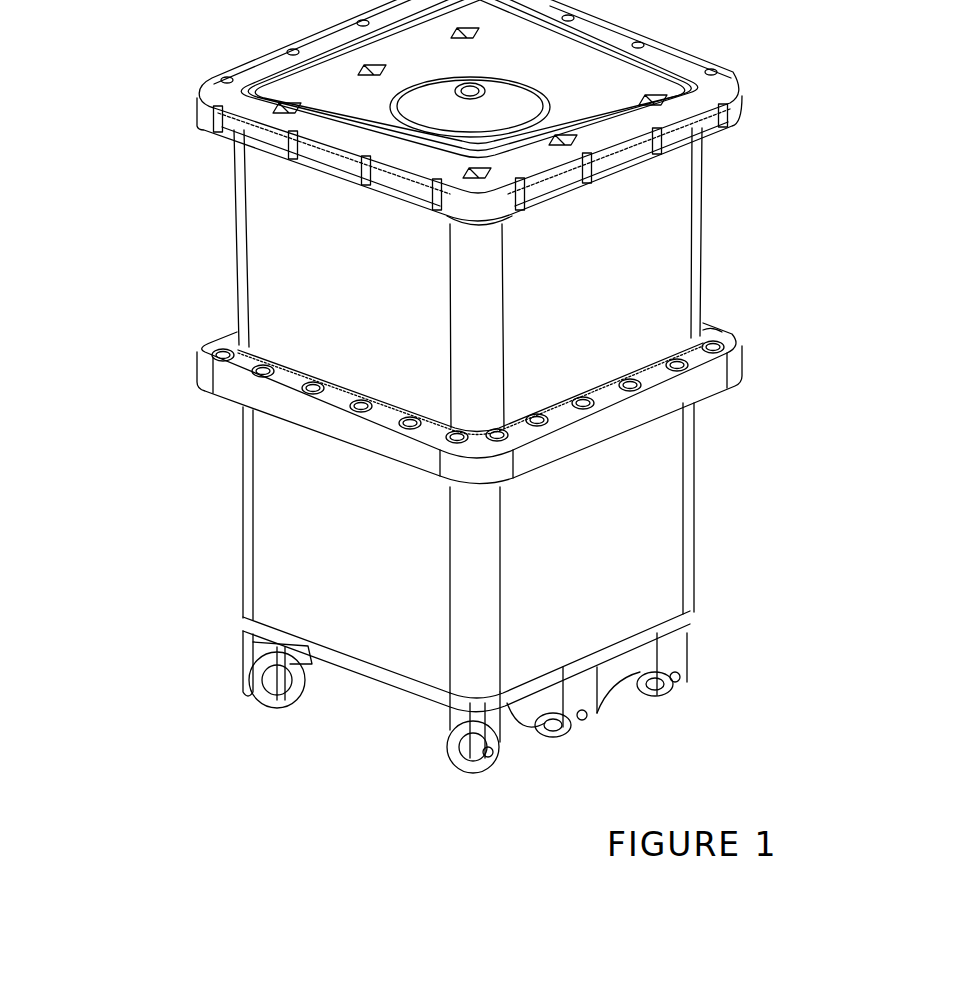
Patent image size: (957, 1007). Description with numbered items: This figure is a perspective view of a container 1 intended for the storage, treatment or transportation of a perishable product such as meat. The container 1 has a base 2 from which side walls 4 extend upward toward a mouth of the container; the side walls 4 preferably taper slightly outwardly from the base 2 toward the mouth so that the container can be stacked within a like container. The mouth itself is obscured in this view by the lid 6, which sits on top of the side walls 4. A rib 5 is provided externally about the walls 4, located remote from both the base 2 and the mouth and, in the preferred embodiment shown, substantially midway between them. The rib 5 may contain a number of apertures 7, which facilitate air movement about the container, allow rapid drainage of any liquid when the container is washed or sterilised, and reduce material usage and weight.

The container 1 is at (161, 584).
The base 2 is at (390, 687).
The side walls 4 is at (270, 453).
The rib 5 is at (772, 355).
The lid 6 is at (673, 60).
The apertures 7 is at (717, 332).